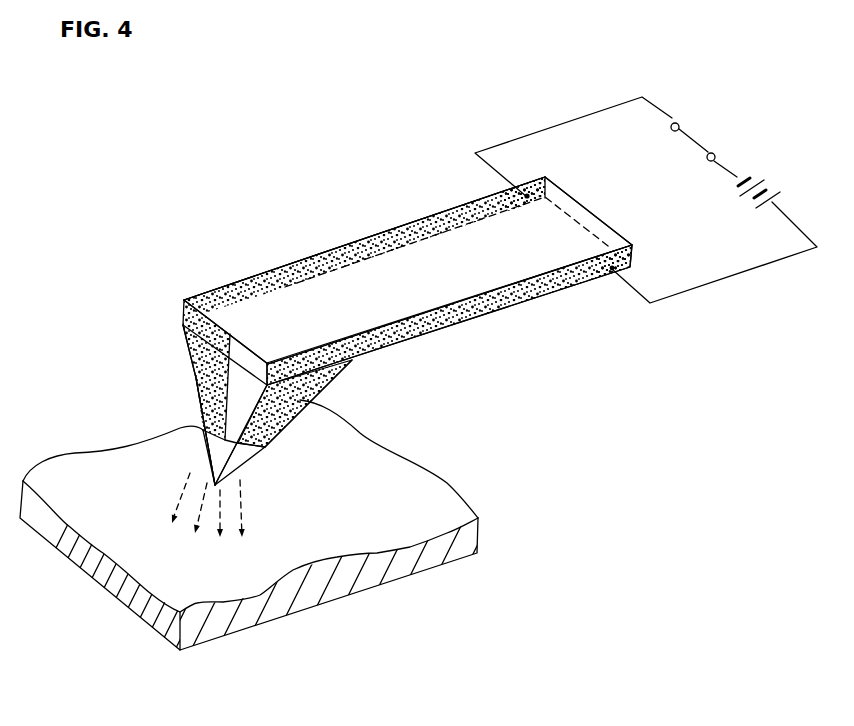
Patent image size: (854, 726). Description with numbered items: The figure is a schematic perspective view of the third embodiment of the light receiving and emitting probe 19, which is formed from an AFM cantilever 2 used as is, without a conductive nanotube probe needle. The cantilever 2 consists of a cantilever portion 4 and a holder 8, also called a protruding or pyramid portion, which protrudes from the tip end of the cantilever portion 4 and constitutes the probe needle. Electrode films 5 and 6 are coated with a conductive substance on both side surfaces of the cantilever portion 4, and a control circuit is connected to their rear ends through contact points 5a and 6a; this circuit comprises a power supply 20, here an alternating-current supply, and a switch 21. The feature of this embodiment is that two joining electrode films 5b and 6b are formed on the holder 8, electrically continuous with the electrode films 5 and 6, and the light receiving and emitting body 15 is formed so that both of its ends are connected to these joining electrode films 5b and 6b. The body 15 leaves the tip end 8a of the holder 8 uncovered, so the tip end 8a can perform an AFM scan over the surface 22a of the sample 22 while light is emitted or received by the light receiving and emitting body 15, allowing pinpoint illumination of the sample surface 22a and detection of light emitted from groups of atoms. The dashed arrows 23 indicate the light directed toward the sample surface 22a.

The light receiving and emitting probe 19 is at (357, 194).
The AFM cantilever 2 is at (308, 255).
The cantilever portion 4 is at (466, 278).
The electrode film 6 is at (433, 225).
The contact point 6a is at (488, 201).
The joining electrode film 6b is at (188, 355).
The electrode film 5 is at (542, 284).
The contact point 5a is at (600, 271).
The joining electrode film 5b is at (254, 444).
The holder 8 is at (277, 417).
The tip end of the holder 8a is at (218, 488).
The light receiving and emitting body 15 is at (200, 432).
The power supply 20 is at (775, 190).
The switch 21 is at (700, 141).
The sample 22 is at (368, 572).
The sample surface 22a is at (248, 566).
The emitted particles 23 is at (170, 508).